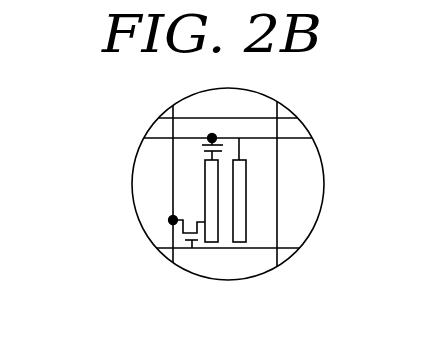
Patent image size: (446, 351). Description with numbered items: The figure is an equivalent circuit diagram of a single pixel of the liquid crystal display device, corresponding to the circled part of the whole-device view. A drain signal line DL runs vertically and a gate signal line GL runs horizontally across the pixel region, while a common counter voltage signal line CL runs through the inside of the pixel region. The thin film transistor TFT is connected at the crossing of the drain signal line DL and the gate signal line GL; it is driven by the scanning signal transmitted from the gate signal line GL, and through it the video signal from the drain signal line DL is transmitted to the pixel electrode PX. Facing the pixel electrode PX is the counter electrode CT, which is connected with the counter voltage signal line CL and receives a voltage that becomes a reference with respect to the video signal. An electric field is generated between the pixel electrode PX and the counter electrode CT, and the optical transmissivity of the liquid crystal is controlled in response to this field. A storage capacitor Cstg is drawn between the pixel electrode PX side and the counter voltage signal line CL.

The drain signal line DL is at (277, 108).
The counter voltage signal line CL is at (289, 138).
The gate signal line GL is at (245, 248).
The storage capacitor Cstg is at (198, 152).
The pixel electrode PX is at (205, 180).
The counter electrode CT is at (248, 193).
The thin film transistor TFT is at (178, 237).